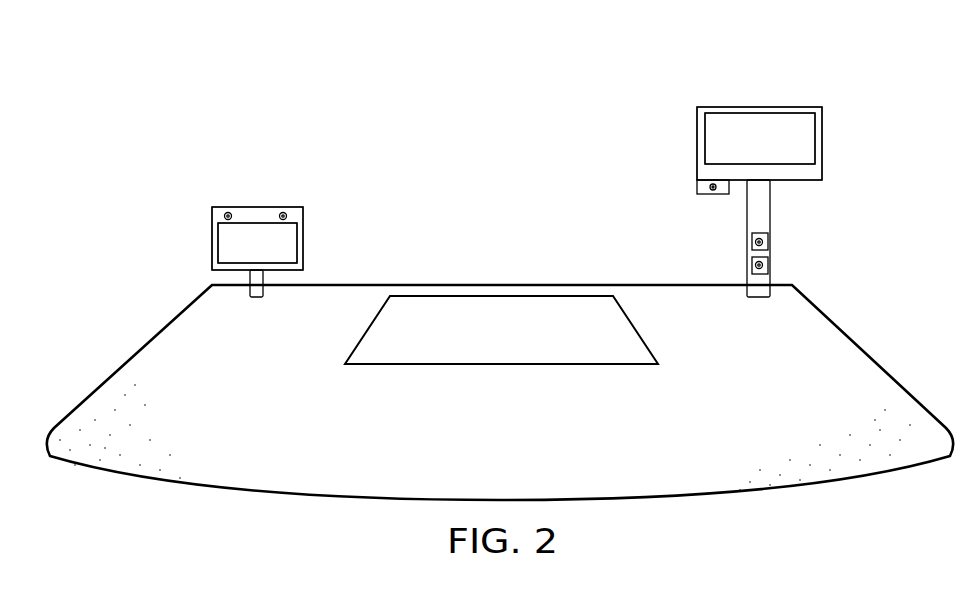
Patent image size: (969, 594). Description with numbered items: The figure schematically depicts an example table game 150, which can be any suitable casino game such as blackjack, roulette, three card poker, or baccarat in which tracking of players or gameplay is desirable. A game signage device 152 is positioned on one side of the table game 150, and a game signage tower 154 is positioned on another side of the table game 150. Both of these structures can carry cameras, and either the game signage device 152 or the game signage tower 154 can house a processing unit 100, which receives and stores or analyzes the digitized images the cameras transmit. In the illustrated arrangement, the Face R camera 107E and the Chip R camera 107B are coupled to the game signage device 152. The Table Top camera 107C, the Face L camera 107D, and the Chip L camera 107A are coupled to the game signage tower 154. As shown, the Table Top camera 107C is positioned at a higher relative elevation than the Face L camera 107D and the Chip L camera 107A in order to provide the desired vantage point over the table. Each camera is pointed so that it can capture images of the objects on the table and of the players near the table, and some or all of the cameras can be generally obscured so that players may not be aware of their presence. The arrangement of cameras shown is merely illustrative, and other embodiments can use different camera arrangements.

The processing unit 100 is at (212, 240).
The table game 150 is at (870, 376).
The game signage device 152 is at (190, 195).
The game signage tower 154 is at (782, 95).
The Chip L camera 107A is at (770, 267).
The Chip R camera 107B is at (283, 212).
The Table Top camera 107C is at (708, 198).
The Face L camera 107D is at (752, 244).
The Face R camera 107E is at (231, 212).